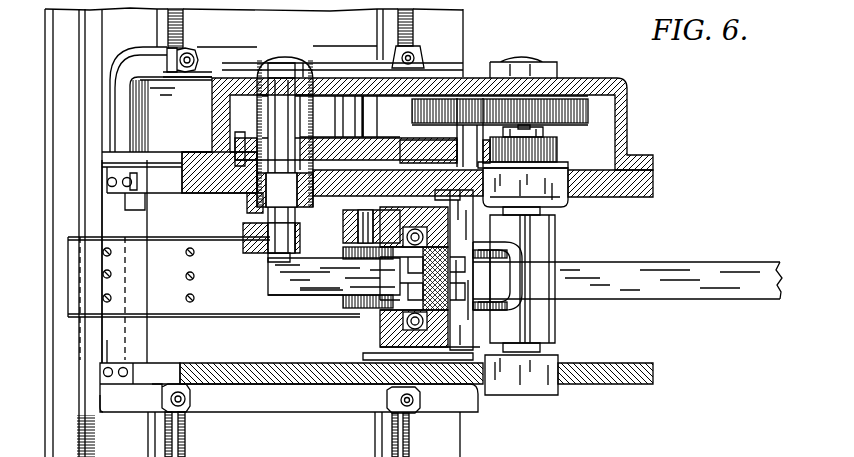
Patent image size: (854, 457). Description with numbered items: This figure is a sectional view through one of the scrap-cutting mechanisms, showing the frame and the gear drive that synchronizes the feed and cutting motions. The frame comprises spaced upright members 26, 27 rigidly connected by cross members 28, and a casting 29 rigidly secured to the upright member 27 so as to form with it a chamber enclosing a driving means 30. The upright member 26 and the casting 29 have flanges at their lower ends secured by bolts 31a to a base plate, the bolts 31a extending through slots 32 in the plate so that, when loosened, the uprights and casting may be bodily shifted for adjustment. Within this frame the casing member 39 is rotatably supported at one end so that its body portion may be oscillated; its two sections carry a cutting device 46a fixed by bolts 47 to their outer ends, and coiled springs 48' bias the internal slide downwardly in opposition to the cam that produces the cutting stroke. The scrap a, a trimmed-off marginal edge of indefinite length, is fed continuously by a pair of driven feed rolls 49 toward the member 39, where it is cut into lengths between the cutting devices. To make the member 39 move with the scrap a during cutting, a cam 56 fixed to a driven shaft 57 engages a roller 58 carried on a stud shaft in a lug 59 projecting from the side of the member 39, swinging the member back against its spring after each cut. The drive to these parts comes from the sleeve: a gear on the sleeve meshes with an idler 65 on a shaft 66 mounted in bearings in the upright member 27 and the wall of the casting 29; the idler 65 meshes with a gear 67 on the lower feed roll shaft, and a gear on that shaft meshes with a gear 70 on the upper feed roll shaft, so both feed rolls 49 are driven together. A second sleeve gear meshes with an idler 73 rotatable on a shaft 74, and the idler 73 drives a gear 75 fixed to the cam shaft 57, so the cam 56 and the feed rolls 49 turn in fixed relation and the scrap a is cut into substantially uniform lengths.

The upright member 26 is at (296, 376).
The upright member 27 is at (609, 192).
The cross member 28 is at (140, 342).
The casting 29 is at (627, 119).
The driving means 30 is at (379, 138).
The bolt 31a is at (196, 52).
The slot 32 is at (178, 444).
The casing member 39 is at (387, 337).
The cutting device 46a is at (405, 268).
The bolt 47 is at (462, 297).
The coiled spring 48' is at (390, 275).
The feed roll 49 is at (555, 323).
The cam 56 is at (251, 248).
The driven shaft 57 is at (275, 113).
The roller 58 is at (353, 258).
The lug 59 is at (345, 216).
The idler 65 is at (441, 100).
The shaft 66 is at (450, 131).
The gear 67 is at (588, 123).
The gear 70 is at (558, 155).
The idler 73 is at (372, 137).
The shaft 74 is at (337, 125).
The gear 75 is at (235, 176).
The scrap a is at (745, 299).